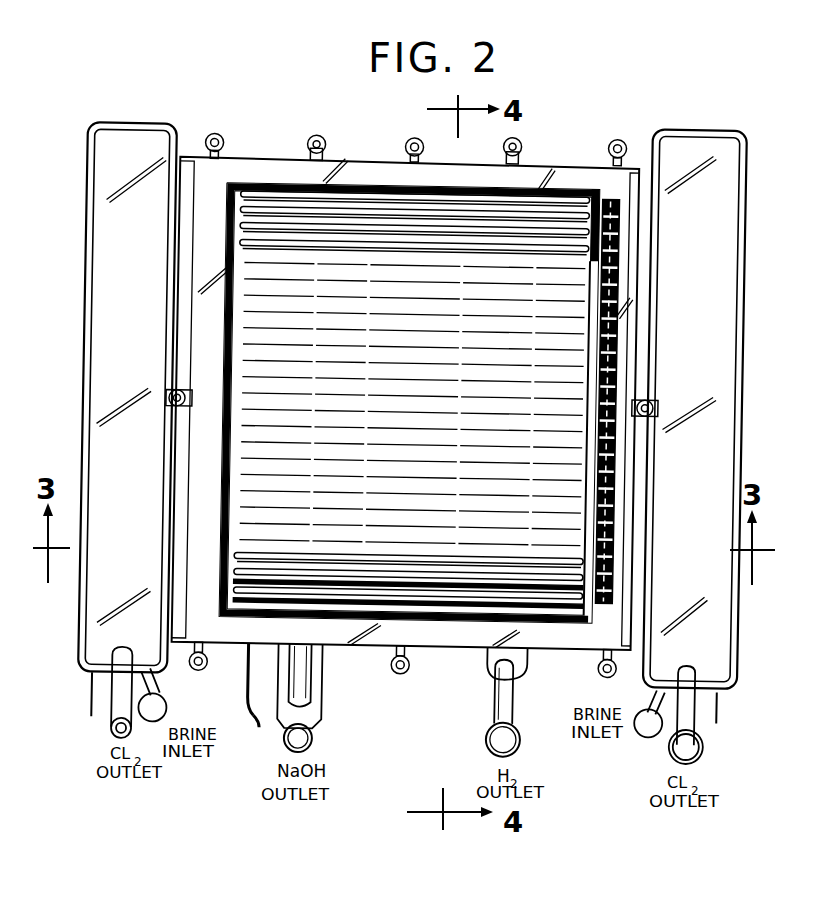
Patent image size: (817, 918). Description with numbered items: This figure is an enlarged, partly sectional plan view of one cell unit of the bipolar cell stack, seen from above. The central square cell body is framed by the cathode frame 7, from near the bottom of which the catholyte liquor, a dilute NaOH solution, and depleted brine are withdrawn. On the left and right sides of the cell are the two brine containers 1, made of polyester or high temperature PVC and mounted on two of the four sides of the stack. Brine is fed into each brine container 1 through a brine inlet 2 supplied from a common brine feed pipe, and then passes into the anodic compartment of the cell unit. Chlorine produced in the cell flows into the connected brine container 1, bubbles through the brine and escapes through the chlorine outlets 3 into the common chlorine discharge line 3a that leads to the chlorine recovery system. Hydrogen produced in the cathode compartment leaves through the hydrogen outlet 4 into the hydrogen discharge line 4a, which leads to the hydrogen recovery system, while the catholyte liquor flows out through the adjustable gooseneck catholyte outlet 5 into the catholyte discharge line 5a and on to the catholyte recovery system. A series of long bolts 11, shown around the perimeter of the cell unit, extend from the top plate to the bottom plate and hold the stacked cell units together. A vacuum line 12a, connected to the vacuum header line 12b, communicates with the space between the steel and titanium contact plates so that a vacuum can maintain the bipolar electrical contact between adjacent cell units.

The brine container 1 is at (704, 350).
The brine inlet 2 is at (164, 708).
The chlorine outlet 3 is at (119, 660).
The chlorine discharge line 3a is at (113, 735).
The hydrogen outlet 4 is at (518, 697).
The hydrogen discharge line 4a is at (492, 738).
The catholyte outlet 5 is at (312, 675).
The catholyte discharge line 5a is at (318, 737).
The cathode frame 7 is at (777, 283).
The long bolt 11 is at (412, 138).
The vacuum line 12a is at (250, 680).
The vacuum header line 12b is at (258, 731).